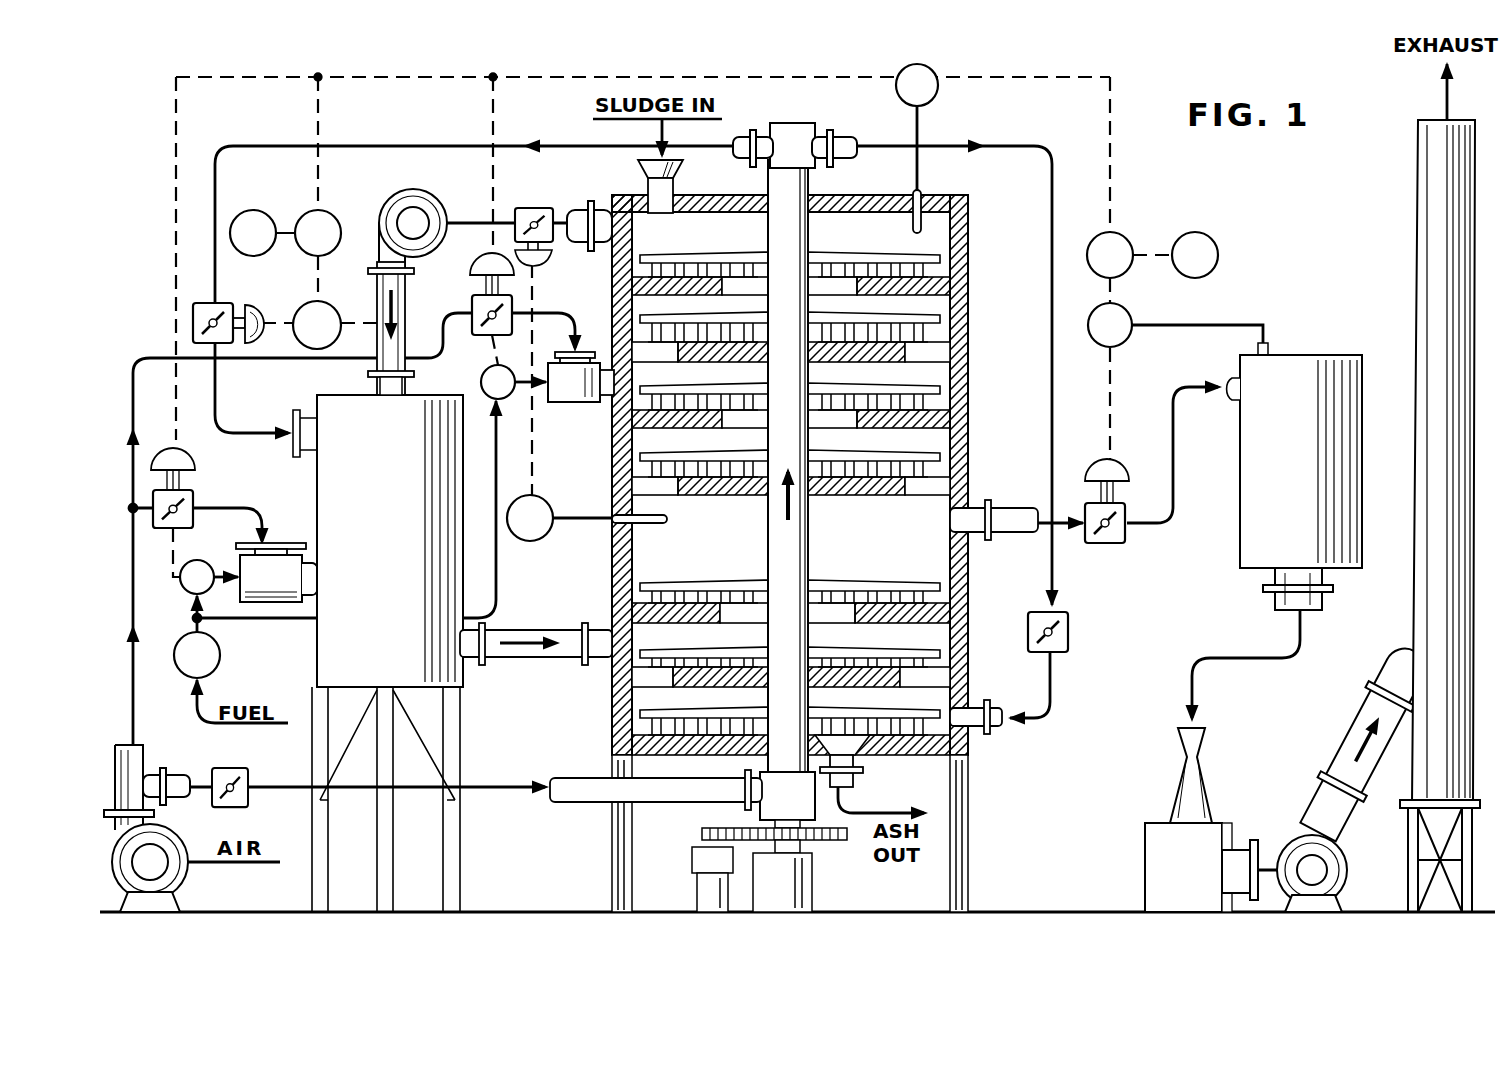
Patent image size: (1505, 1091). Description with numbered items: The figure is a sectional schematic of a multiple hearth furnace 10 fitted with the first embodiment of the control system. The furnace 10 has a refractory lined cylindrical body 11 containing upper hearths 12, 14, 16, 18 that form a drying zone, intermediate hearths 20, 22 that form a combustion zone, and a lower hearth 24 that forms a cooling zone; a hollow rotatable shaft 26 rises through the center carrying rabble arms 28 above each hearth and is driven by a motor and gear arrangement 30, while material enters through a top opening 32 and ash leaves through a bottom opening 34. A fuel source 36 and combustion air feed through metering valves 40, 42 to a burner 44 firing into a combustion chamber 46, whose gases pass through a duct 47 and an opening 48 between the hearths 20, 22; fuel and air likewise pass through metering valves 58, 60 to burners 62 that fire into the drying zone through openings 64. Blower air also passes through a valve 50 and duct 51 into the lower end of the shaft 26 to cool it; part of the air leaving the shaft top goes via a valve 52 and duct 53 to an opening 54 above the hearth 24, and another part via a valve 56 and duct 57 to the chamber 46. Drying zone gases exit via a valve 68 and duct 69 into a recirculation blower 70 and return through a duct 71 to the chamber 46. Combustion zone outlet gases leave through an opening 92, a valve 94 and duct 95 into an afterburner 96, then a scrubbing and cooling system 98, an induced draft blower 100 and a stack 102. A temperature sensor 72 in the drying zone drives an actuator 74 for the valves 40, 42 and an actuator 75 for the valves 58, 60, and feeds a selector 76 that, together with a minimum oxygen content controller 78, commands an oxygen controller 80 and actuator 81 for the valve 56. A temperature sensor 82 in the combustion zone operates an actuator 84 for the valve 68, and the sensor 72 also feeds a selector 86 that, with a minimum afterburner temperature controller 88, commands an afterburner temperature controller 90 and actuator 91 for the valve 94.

The multiple hearth furnace 10 is at (975, 258).
The cylindrical body 11 is at (968, 345).
The upper hearth 12 is at (930, 290).
The upper hearth 14 is at (930, 355).
The upper hearth 16 is at (925, 420).
The upper hearth 18 is at (745, 498).
The intermediate hearth 20 is at (925, 617).
The intermediate hearth 22 is at (930, 678).
The lower hearth 24 is at (940, 757).
The hollow rotatable shaft 26 is at (812, 537).
The rabble arms 28 is at (905, 258).
The motor and gear arrangement 30 is at (832, 850).
The opening 32 is at (670, 194).
The opening 34 is at (862, 752).
The fuel source 36 is at (218, 657).
The metering valve 40 is at (185, 588).
The metering valve 42 is at (193, 492).
The burner 44 is at (285, 545).
The combustion chamber 46 is at (370, 503).
The duct 47 is at (535, 628).
The opening 48 is at (600, 630).
The valve 50 is at (240, 770).
The duct 51 is at (580, 800).
The valve 52 is at (1070, 632).
The duct 53 is at (845, 138).
The opening 54 is at (968, 725).
The valve 56 is at (193, 322).
The duct 57 is at (745, 136).
The metering valve 58 is at (486, 372).
The metering valve 60 is at (472, 305).
The burner 62 is at (566, 404).
The opening 64 is at (612, 418).
The valve 68 is at (530, 208).
The duct 69 is at (578, 208).
The recirculation blower 70 is at (408, 196).
The duct 71 is at (380, 335).
The temperature sensor 72 is at (925, 67).
The actuator 74 is at (185, 462).
The actuator 75 is at (472, 268).
The selector 76 is at (330, 222).
The minimum oxygen content controller 78 is at (255, 222).
The oxygen controller 80 is at (330, 308).
The actuator 81 is at (255, 312).
The temperature sensor 82 is at (540, 540).
The actuator 84 is at (545, 264).
The selector 86 is at (1122, 243).
The minimum afterburner temperature controller 88 is at (1205, 243).
The afterburner temperature controller 90 is at (1124, 312).
The actuator 91 is at (1118, 472).
The opening 92 is at (960, 525).
The valve 94 is at (1110, 543).
The duct 95 is at (1005, 505).
The afterburner 96 is at (1300, 370).
The scrubbing and cooling system 98 is at (1145, 865).
The induced draft blower 100 is at (1348, 870).
The stack 102 is at (1420, 197).